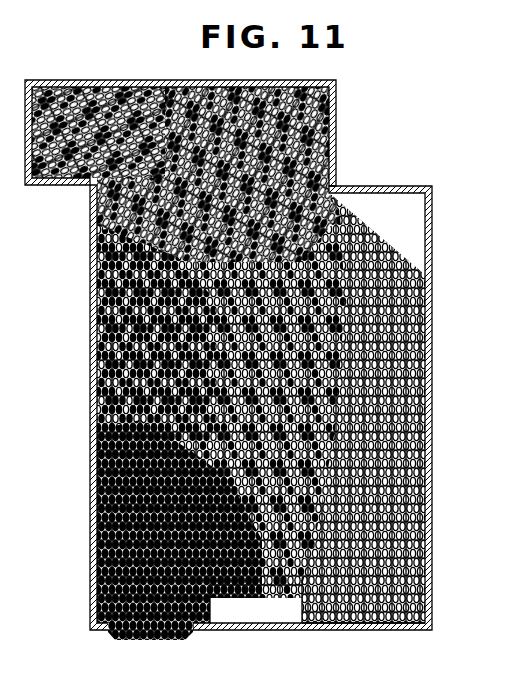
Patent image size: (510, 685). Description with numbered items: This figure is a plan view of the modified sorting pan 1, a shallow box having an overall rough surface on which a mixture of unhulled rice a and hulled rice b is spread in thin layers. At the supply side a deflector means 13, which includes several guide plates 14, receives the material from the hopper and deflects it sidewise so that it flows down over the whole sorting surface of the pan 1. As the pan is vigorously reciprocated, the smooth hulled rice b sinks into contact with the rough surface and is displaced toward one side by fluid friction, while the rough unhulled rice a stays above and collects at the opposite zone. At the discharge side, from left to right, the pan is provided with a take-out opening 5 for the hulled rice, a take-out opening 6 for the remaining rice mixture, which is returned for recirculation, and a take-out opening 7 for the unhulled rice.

The sorting pan 1 is at (415, 247).
The deflector means 13 is at (337, 96).
The guide plates 14 is at (305, 143).
The take-out opening for hulled rice 5 is at (104, 630).
The take-out opening for the rice mixture 6 is at (275, 622).
The take-out opening for unhulled rice 7 is at (355, 622).
The unhulled rice a is at (95, 525).
The hulled rice b is at (413, 530).